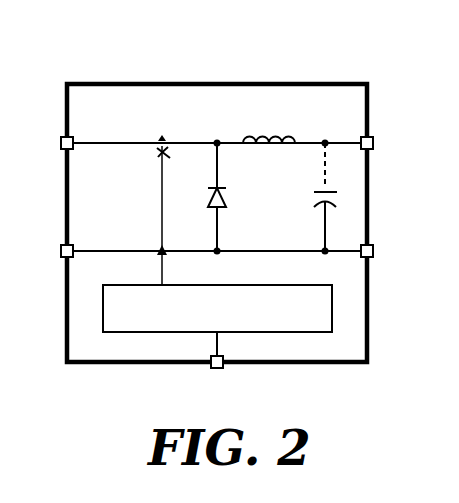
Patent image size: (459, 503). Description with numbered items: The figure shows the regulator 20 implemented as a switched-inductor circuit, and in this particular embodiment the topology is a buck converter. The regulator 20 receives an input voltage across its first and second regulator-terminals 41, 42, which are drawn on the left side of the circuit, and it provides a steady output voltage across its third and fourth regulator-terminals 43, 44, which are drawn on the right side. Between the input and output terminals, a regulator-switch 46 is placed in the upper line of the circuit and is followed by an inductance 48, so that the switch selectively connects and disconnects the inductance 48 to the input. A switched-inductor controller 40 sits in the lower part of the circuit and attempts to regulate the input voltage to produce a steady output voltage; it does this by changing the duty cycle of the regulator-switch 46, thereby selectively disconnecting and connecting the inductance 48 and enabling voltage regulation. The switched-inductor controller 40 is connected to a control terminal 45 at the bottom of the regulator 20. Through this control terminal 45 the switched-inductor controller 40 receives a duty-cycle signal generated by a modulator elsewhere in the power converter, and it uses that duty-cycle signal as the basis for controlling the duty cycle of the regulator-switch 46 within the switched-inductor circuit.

The regulator 20 is at (95, 74).
The switched-inductor controller 40 is at (231, 318).
The first regulator-terminal 41 is at (49, 143).
The second regulator-terminal 42 is at (49, 251).
The third regulator-terminal 43 is at (385, 143).
The fourth regulator-terminal 44 is at (385, 251).
The control terminal 45 is at (218, 367).
The regulator-switch 46 is at (164, 197).
The inductance 48 is at (269, 126).